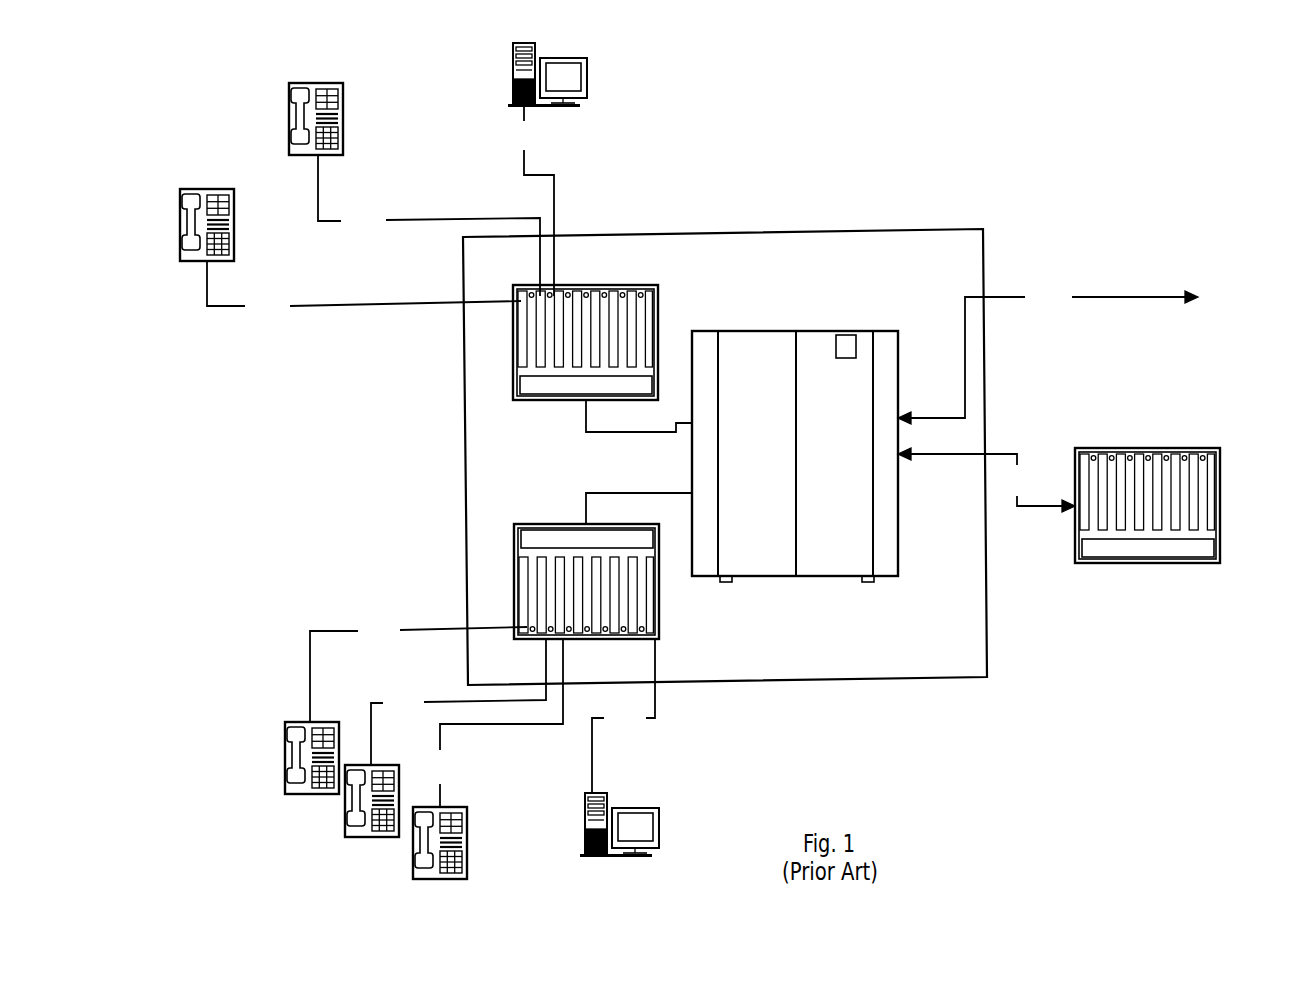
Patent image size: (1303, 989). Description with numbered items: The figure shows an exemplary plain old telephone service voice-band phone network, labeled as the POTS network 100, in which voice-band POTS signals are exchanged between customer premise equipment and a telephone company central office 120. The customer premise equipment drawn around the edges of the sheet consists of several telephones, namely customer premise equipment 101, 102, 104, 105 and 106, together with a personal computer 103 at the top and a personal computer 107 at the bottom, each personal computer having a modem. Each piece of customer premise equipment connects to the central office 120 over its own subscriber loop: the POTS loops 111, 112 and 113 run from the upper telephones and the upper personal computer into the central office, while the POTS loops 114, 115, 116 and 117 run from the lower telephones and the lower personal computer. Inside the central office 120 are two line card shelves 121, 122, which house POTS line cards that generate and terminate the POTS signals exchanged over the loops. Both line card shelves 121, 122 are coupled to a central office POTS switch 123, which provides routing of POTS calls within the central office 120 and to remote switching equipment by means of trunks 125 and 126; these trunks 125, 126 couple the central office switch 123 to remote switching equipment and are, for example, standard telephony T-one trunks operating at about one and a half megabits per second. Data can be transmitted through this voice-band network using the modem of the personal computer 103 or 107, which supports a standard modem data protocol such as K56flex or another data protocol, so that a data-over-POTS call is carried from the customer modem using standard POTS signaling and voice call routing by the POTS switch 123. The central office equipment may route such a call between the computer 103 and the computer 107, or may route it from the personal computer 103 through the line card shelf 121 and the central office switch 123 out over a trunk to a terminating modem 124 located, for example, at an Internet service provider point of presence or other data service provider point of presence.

The POTS network 100 is at (834, 110).
The customer premise equipment 101 is at (205, 188).
The customer premise equipment 102 is at (318, 78).
The personal computer 103 is at (535, 43).
The customer premise equipment 104 is at (310, 794).
The customer premise equipment 105 is at (372, 838).
The customer premise equipment 106 is at (437, 880).
The personal computer 107 is at (593, 858).
The POTS loop 111 is at (364, 289).
The POTS loop 112 is at (429, 225).
The POTS loop 113 is at (530, 201).
The POTS loop 114 is at (418, 670).
The POTS loop 115 is at (458, 702).
The POTS loop 116 is at (492, 723).
The POTS loop 117 is at (623, 716).
The telephone company central office 120 is at (863, 223).
The line card shelf 121 is at (622, 285).
The line card shelf 122 is at (662, 582).
The central office POTS switch 123 is at (797, 330).
The terminating modem 124 is at (1148, 448).
The trunk 125 is at (1048, 355).
The trunk 126 is at (986, 480).